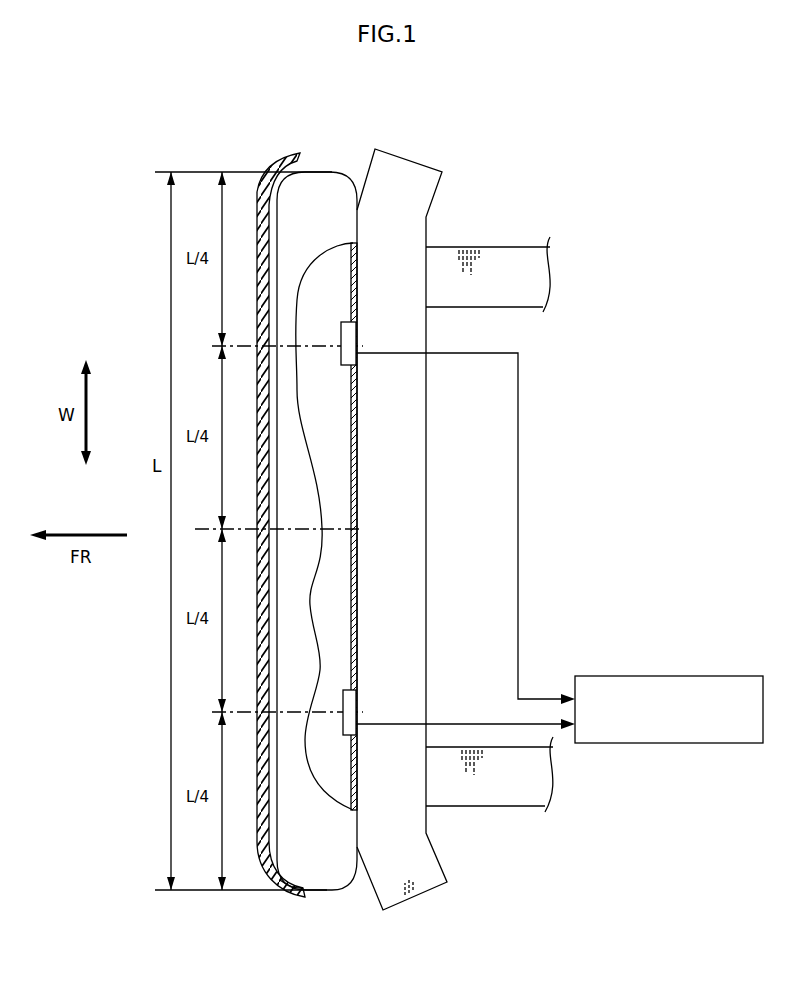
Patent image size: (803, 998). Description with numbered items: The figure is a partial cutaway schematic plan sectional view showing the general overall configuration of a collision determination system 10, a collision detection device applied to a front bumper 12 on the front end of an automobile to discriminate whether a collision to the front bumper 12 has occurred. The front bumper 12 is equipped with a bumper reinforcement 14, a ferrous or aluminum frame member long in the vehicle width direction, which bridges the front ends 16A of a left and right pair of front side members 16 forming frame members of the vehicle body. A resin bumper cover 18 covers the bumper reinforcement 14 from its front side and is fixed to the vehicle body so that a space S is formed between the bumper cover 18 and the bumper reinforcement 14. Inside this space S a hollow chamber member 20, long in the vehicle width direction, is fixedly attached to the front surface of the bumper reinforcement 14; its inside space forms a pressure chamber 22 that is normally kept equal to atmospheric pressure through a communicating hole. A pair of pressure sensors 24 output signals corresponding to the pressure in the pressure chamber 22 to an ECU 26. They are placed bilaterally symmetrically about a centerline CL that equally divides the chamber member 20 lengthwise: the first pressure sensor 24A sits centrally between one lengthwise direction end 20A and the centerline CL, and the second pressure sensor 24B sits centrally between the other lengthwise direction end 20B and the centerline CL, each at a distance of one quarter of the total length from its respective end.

The collision determination system 10 is at (338, 155).
The front bumper 12 is at (250, 855).
The bumper reinforcement 14 is at (424, 526).
The front side members 16 is at (485, 535).
The front ends 16A is at (420, 268).
The bumper cover 18 is at (295, 900).
The chamber member 20 is at (334, 526).
The one lengthwise direction end 20A is at (312, 170).
The other lengthwise direction end 20B is at (322, 893).
The pressure chamber 22 is at (338, 423).
The pressure sensors 24 is at (377, 526).
The first pressure sensor 24A is at (350, 337).
The second pressure sensor 24B is at (350, 703).
The ECU 26 is at (688, 676).
The space S is at (267, 590).
The centerline CL is at (208, 527).